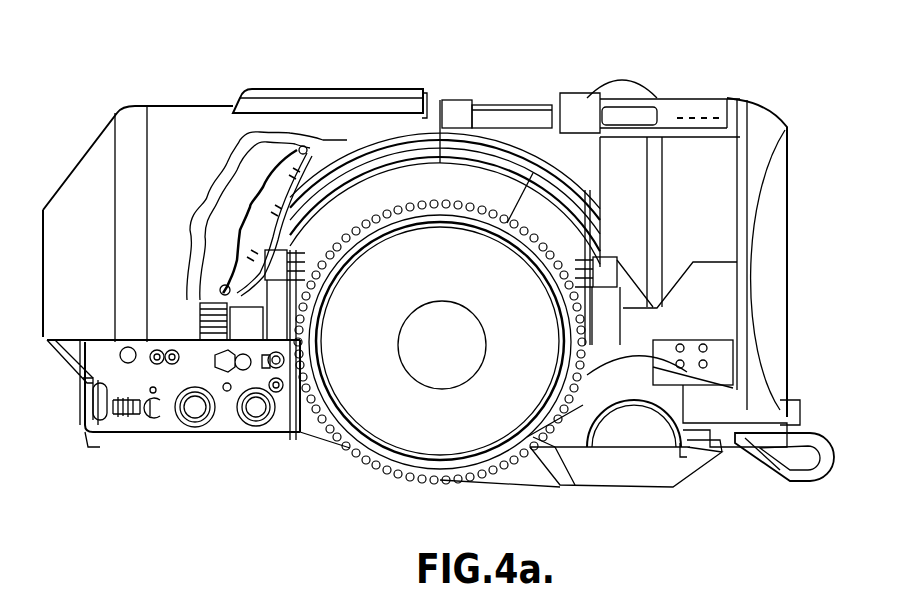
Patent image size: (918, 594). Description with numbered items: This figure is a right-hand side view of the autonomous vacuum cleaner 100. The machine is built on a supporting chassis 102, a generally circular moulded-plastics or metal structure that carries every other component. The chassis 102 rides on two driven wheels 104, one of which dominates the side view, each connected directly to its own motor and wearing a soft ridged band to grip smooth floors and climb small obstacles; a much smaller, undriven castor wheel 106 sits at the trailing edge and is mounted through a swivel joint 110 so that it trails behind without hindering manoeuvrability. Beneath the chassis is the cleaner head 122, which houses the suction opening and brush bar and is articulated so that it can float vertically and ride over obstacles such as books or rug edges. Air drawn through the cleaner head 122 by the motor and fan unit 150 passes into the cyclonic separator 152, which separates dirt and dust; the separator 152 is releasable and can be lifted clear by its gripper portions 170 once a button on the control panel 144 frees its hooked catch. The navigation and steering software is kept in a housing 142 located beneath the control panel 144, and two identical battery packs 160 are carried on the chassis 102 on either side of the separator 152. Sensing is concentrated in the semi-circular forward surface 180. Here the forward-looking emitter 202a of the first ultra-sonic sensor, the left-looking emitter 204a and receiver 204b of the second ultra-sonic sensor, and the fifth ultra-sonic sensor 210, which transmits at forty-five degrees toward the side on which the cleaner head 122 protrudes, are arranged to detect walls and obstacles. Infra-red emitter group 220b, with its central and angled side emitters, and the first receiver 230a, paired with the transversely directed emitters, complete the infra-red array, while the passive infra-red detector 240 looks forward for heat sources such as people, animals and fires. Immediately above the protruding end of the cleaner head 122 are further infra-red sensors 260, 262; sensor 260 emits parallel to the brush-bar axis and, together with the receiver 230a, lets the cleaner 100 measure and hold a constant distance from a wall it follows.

The vacuum cleaner 100 is at (705, 66).
The supporting chassis 102 is at (128, 348).
The driven wheel 104 is at (455, 455).
The castor wheel 106 is at (824, 473).
The swivel joint 110 is at (780, 427).
The cleaner head 122 is at (620, 465).
The housing 142 is at (713, 205).
The control panel 144 is at (700, 100).
The motor and fan unit 150 is at (625, 183).
The cyclonic separator 152 is at (187, 128).
The battery pack 160 is at (333, 148).
The gripper portion 170 is at (313, 90).
The forward surface 180 is at (83, 378).
The emitter 202a is at (90, 447).
The emitter 204a is at (256, 410).
The receiver 204b is at (195, 412).
The fifth ultra-sonic sensor 210 is at (160, 350).
The second emitter group 220b is at (137, 417).
The first receiver 230a is at (312, 423).
The passive infra-red detector 240 is at (76, 372).
The infra-red sensor 260 is at (680, 336).
The infra-red sensor 262 is at (740, 351).